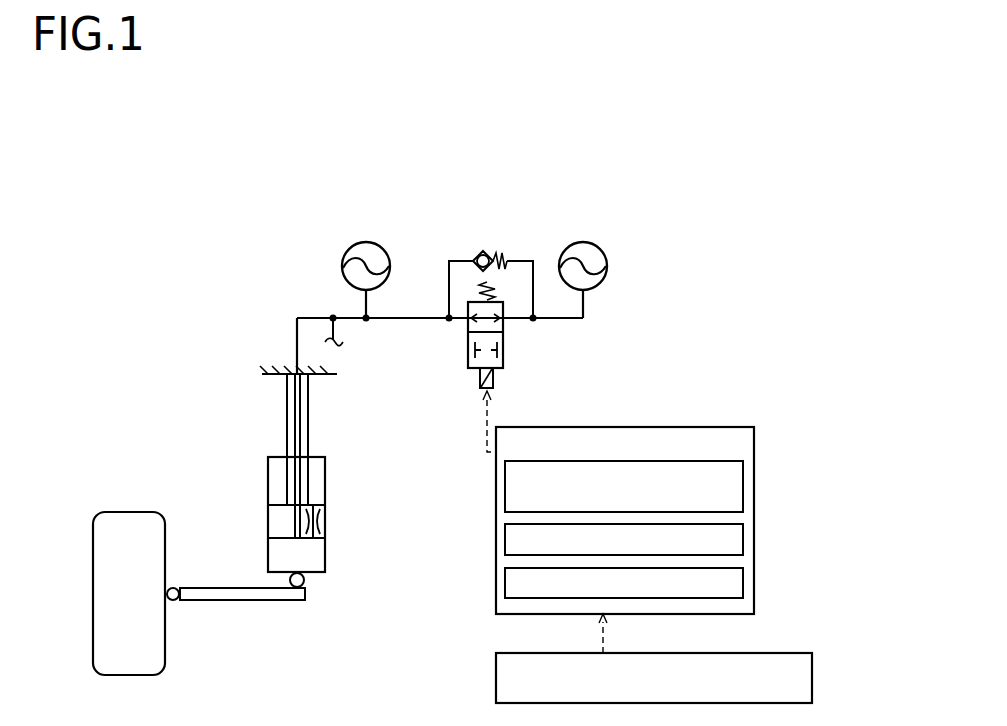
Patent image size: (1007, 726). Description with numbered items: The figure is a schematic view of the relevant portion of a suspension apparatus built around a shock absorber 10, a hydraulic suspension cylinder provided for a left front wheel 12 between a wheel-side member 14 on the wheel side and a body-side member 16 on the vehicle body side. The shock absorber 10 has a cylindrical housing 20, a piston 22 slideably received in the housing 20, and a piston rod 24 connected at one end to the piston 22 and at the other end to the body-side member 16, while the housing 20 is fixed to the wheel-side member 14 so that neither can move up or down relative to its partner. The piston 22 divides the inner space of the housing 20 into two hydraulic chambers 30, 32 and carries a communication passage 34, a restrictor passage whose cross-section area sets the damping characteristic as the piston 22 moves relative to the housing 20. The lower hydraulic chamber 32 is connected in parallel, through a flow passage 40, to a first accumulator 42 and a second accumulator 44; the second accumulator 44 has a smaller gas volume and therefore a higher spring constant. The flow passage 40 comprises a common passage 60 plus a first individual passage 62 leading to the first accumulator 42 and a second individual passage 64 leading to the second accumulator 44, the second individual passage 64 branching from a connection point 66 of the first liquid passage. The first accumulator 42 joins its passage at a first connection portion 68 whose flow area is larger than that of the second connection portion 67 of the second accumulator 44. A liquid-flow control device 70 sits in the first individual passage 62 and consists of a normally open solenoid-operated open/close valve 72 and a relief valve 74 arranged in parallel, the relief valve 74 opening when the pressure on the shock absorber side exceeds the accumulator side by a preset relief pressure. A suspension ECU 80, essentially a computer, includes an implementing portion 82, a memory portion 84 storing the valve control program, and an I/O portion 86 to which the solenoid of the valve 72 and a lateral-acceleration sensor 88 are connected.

The shock absorber 10 is at (252, 491).
The left front wheel 12 is at (128, 520).
The wheel-side member 14 is at (230, 594).
The body-side member 16 is at (327, 375).
The housing 20 is at (325, 468).
The piston 22 is at (272, 533).
The piston rod 24 is at (309, 411).
The hydraulic chamber 30 is at (313, 495).
The hydraulic chamber 32 is at (282, 558).
The communication passage 34 is at (325, 535).
The flow passage 40 is at (417, 360).
The first accumulator 42 is at (591, 225).
The second accumulator 44 is at (358, 232).
The common passage 60 is at (296, 338).
The first individual passage 62 is at (585, 319).
The second individual passage 64 is at (365, 304).
The connection point 66 is at (366, 320).
The second connection portion 67 is at (365, 290).
The first connection portion 68 is at (585, 294).
The liquid-flow control device 70 is at (465, 227).
The solenoid-operated open/close valve 72 is at (504, 364).
The relief valve 74 is at (497, 261).
The suspension ECU 80 is at (748, 448).
The implementing portion 82 is at (737, 480).
The memory portion 84 is at (740, 542).
The I/O portion 86 is at (737, 585).
The lateral-acceleration sensor 88 is at (802, 693).